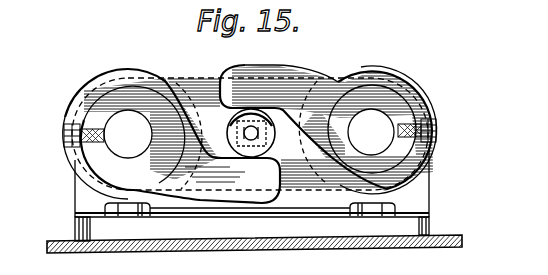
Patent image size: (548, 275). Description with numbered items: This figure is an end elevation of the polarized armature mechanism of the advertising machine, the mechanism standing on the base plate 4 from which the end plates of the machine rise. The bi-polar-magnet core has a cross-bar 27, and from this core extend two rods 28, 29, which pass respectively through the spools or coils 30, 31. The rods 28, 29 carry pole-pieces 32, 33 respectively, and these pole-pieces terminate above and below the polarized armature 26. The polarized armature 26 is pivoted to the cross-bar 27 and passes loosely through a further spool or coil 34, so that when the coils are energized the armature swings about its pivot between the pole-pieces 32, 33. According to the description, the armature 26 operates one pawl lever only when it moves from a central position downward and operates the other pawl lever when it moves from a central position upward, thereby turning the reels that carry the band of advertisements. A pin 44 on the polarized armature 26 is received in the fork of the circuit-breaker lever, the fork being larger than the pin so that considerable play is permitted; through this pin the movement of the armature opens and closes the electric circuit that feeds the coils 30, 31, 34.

The base plate 4 is at (363, 246).
The polarized armature 26 is at (233, 133).
The cross-bar 27 is at (194, 85).
The rod 28 is at (371, 132).
The rod 29 is at (128, 134).
The spool or coil 30 is at (376, 72).
The spool or coil 31 is at (120, 72).
The pole-piece 32 is at (276, 66).
The pole-piece 33 is at (198, 197).
The spool or coil 34 is at (239, 131).
The pin 44 is at (268, 133).